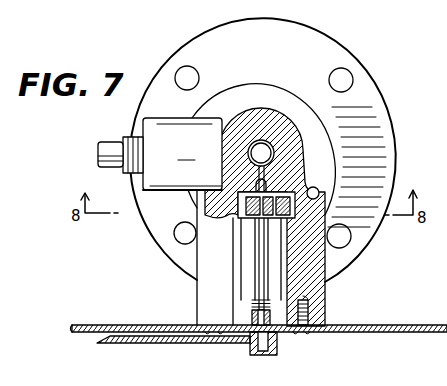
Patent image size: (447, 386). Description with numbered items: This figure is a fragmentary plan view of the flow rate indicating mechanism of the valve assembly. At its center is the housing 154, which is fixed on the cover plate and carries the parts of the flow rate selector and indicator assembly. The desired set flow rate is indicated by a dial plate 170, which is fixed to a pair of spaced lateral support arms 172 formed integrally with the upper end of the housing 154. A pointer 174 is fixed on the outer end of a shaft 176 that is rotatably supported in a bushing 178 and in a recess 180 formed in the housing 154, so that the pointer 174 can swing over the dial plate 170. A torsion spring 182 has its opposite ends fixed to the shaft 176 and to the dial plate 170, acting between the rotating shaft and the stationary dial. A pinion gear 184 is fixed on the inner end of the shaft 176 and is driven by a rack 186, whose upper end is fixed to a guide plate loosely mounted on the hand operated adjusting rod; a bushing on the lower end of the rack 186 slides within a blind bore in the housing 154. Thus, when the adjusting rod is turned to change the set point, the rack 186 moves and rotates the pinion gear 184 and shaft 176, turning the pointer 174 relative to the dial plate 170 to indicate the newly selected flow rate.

The housing 154 is at (271, 93).
The dial plate 170 is at (394, 333).
The lateral support arms 172 is at (321, 288).
The pointer 174 is at (180, 350).
The shaft 176 is at (197, 274).
The bushing 178 is at (252, 318).
The recess 180 is at (304, 172).
The torsion spring 182 is at (253, 298).
The pinion gear 184 is at (240, 214).
The rack 186 is at (258, 252).